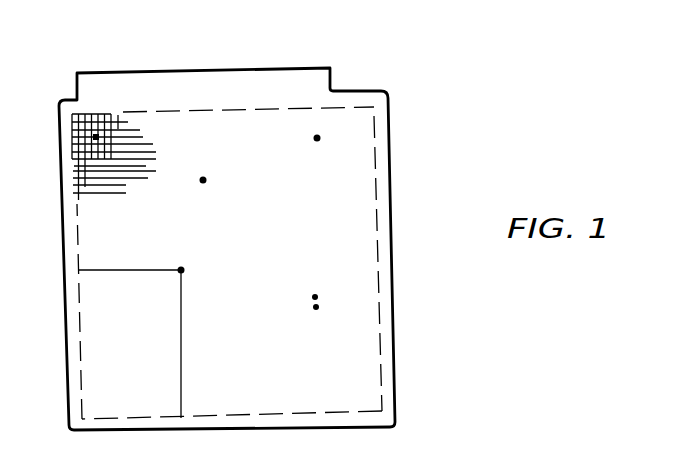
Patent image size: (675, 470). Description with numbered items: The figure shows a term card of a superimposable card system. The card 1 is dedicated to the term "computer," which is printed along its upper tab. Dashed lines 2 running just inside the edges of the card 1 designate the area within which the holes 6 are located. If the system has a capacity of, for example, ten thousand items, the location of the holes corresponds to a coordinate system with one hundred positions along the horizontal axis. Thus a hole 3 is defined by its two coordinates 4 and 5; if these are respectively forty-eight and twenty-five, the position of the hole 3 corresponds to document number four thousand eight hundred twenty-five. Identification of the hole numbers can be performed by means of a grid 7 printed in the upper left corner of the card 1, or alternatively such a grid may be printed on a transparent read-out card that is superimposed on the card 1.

The card 1 is at (56, 360).
The dashed lines 2 is at (366, 119).
The hole 3 is at (173, 262).
The coordinate 4 is at (174, 320).
The coordinate 5 is at (108, 264).
The holes 6 is at (195, 172).
The grid 7 is at (76, 121).